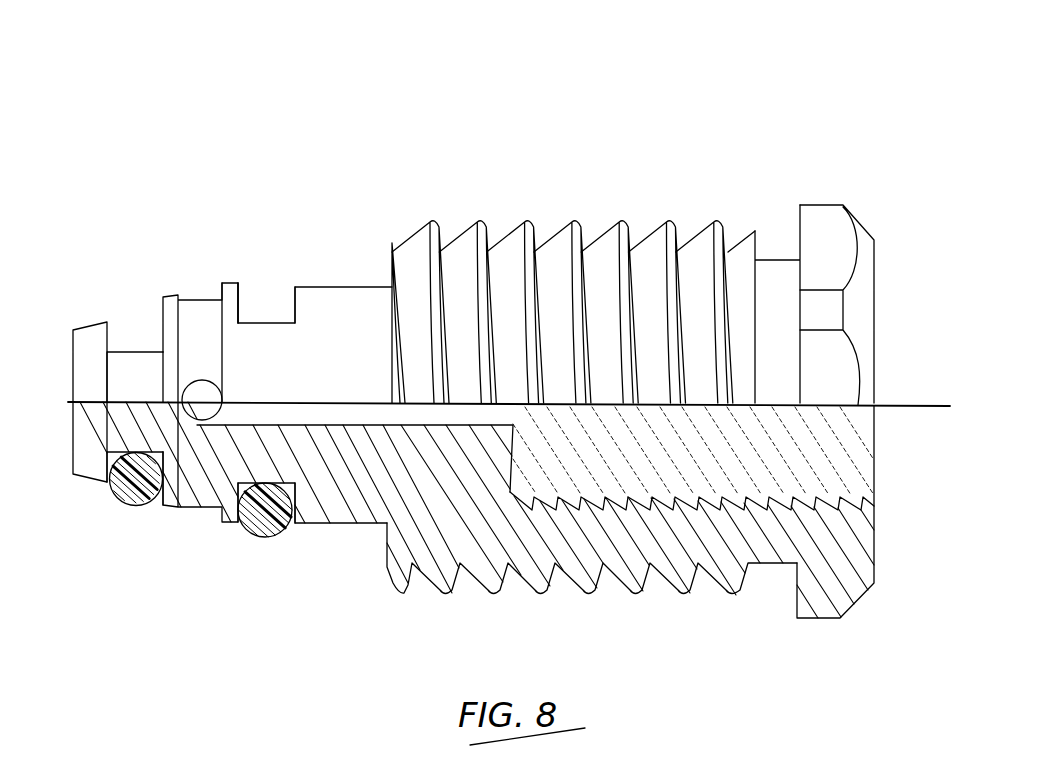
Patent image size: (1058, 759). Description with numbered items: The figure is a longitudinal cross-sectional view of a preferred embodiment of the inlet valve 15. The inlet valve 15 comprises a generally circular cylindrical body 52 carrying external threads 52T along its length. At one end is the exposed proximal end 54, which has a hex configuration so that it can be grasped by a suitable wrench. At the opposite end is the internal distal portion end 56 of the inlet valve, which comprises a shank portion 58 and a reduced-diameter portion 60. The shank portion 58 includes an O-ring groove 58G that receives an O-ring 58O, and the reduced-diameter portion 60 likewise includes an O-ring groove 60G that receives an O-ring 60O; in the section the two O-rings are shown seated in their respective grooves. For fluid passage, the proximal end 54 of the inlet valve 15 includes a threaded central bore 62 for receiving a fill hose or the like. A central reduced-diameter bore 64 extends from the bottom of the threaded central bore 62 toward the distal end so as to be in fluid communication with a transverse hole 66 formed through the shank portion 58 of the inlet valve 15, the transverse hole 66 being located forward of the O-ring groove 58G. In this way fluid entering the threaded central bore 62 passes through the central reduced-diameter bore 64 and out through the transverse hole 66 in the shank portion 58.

The inlet valve 15 is at (797, 36).
The internal distal portion end 56 is at (190, 218).
The reduced-diameter portion 60 is at (105, 321).
The O-ring groove 60G is at (135, 416).
The shank portion 58 is at (186, 300).
The O-ring groove 58G is at (266, 403).
The transverse hole 66 is at (203, 388).
The central reduced-diameter bore 64 is at (355, 447).
The O-ring 60O is at (140, 506).
The O-ring 58O is at (273, 538).
The external threads 52T is at (668, 229).
The body 52 is at (774, 257).
The proximal end 54 is at (865, 222).
The threaded central bore 62 is at (838, 502).